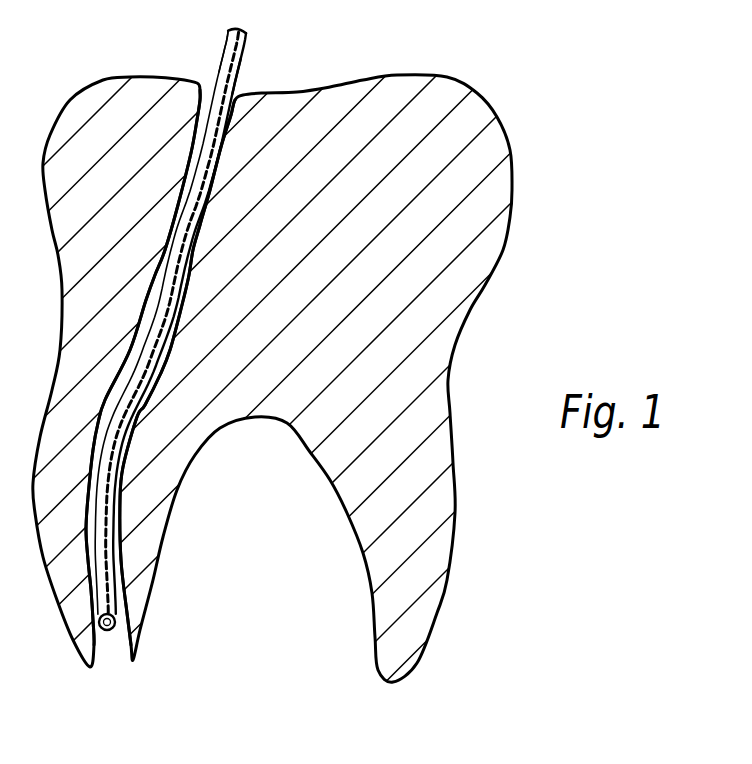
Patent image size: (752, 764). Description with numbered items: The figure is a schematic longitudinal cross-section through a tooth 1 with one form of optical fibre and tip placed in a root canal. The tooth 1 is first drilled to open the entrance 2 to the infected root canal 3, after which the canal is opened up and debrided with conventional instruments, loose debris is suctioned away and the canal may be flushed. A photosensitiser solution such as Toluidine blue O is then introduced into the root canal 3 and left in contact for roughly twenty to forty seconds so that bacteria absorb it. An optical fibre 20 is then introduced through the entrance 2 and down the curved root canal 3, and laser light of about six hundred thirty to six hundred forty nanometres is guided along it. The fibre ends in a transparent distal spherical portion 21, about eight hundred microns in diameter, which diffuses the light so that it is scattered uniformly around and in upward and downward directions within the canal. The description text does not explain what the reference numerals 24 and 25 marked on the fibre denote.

The tooth 1 is at (520, 186).
The entrance 2 is at (158, 403).
The root canal 3 is at (121, 514).
The optical fibre 20 is at (209, 160).
The distal spherical portion 21 is at (108, 631).
The instrument shaft 24 is at (219, 44).
The instrument working surface 25 is at (243, 78).